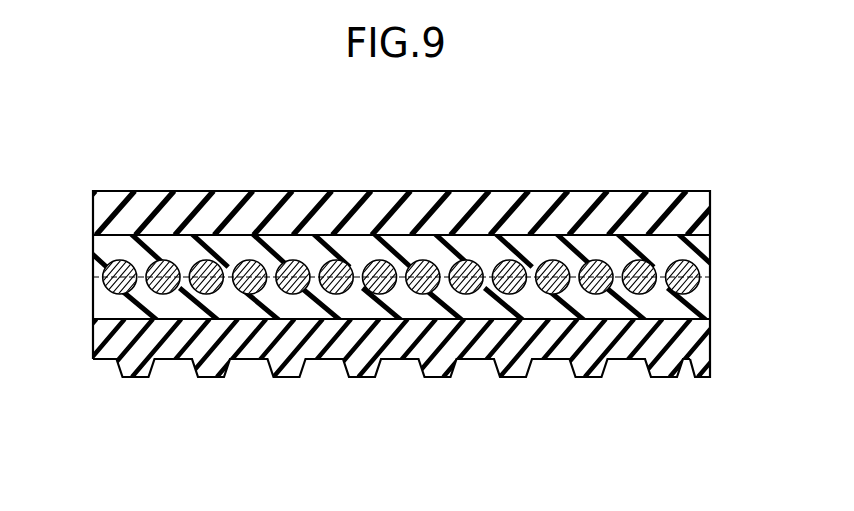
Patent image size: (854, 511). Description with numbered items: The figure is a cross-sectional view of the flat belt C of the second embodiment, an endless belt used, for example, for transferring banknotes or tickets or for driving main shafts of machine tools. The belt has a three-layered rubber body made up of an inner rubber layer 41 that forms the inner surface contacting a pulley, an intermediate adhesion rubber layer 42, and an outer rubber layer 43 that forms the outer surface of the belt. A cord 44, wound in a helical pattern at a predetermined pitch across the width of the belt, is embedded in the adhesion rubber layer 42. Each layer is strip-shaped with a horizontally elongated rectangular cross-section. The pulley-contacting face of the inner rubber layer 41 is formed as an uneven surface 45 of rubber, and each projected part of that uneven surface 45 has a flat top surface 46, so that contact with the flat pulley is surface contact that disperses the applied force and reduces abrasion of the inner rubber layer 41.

The flat belt C is at (140, 160).
The inner rubber layer 41 is at (103, 333).
The intermediate adhesion rubber layer 42 is at (680, 247).
The outer rubber layer 43 is at (107, 212).
The cord 44 is at (423, 260).
The uneven surface 45 is at (693, 363).
The flat top surface 46 is at (660, 378).